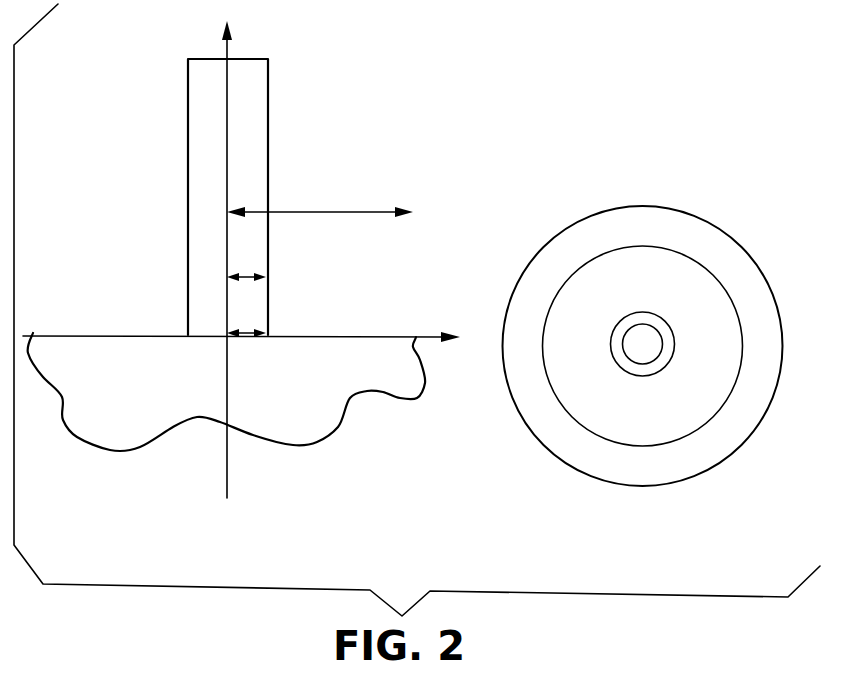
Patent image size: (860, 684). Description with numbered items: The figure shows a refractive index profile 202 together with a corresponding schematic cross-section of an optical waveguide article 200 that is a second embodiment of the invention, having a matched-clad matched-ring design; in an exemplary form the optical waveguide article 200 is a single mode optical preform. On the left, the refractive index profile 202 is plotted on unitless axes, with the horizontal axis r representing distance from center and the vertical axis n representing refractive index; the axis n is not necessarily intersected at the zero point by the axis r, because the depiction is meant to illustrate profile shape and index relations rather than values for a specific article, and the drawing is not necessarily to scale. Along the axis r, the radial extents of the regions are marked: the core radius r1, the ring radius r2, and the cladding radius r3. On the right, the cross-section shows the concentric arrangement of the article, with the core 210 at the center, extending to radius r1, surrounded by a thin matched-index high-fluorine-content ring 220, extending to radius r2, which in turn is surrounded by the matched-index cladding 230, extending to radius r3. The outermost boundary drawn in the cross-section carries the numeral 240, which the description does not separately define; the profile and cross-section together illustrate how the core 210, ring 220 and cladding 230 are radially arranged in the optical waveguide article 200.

The optical waveguide article 200 is at (545, 480).
The refractive index profile 202 is at (322, 172).
The core 210 is at (646, 350).
The matched-index high-fluorine-content ring 220 is at (655, 367).
The matched-index cladding 230 is at (688, 415).
The outer cladding 240 is at (727, 433).
The refractive index axis n is at (227, 80).
The distance from center axis r is at (428, 336).
The core radius r1 is at (246, 341).
The ring radius r2 is at (250, 280).
The cladding radius r3 is at (331, 214).